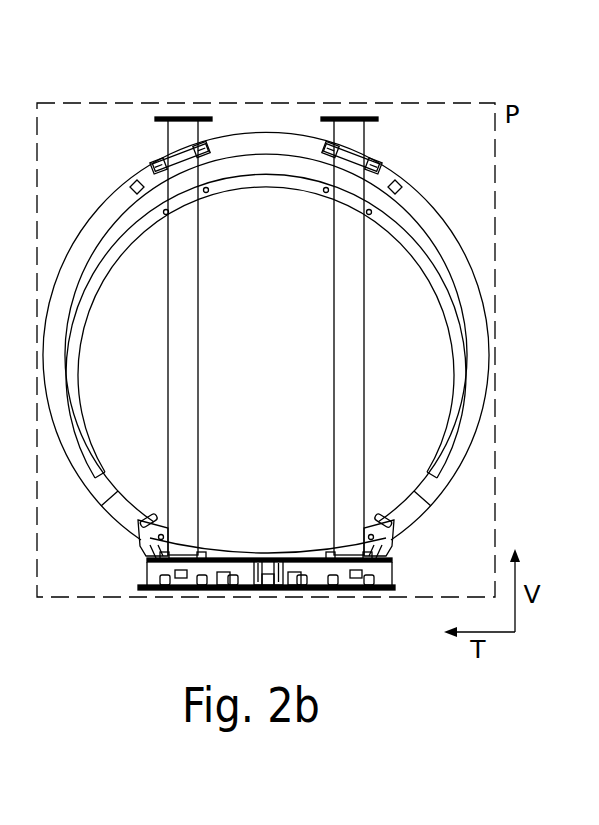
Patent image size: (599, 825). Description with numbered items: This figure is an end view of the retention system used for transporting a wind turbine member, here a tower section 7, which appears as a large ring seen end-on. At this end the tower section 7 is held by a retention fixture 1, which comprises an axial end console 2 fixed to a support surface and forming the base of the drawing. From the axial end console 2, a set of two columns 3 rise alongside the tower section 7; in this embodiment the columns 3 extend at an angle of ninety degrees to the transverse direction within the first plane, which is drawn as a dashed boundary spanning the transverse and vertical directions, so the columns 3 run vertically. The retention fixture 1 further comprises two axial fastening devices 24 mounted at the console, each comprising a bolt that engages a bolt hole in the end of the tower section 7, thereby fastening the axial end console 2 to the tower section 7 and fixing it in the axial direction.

The retention fixture 1 is at (379, 65).
The axial end console 2 is at (312, 568).
The columns 3 is at (182, 518).
The tower section 7 is at (117, 147).
The axial fastening devices 24 is at (258, 562).